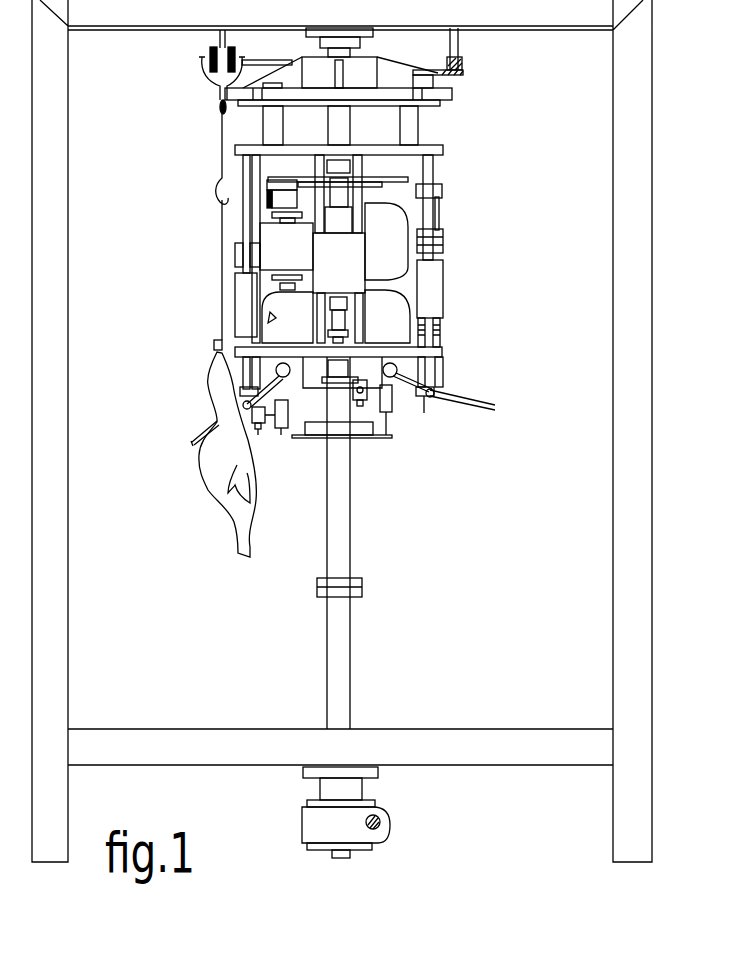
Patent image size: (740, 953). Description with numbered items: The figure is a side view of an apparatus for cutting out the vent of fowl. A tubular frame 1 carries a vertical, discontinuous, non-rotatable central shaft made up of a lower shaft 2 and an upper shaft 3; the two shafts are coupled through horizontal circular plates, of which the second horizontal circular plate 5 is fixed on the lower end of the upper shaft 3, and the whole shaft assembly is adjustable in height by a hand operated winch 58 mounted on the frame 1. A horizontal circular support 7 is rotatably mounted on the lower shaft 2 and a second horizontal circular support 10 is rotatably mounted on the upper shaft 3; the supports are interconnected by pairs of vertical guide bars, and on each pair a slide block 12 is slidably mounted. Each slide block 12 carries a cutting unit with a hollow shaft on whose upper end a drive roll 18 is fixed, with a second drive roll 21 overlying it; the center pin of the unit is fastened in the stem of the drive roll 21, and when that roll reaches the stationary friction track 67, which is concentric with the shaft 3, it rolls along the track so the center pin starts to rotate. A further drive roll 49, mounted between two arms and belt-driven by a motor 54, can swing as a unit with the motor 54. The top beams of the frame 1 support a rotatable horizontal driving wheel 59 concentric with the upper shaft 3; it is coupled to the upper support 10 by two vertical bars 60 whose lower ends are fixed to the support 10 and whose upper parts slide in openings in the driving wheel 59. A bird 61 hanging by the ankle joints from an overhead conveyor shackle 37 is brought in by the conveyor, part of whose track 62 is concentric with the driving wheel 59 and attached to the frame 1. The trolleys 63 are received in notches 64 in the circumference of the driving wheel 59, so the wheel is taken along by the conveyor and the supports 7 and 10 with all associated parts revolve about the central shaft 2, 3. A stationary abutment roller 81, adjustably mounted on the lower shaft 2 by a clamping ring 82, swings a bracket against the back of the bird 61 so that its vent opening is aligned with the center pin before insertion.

The tubular frame 1 is at (613, 519).
The lower shaft 2 is at (350, 512).
The upper shaft 3 is at (340, 118).
The second horizontal circular plate 5 is at (408, 180).
The horizontal circular support 7 is at (442, 352).
The second horizontal circular support 10 is at (443, 150).
The slide block 12 is at (443, 288).
The drive roll 18 is at (443, 238).
The second drive roll 21 is at (443, 192).
The overhead conveyor shackle 37 is at (222, 248).
The drive roll 49 is at (275, 242).
The motor 54 is at (393, 242).
The hand operated winch 58 is at (385, 816).
The driving wheel 59 is at (452, 93).
The vertical bars 60 is at (270, 118).
The bird 61 is at (217, 462).
The conveyor track 62 is at (462, 66).
The trolleys 63 is at (203, 64).
The notches 64 is at (262, 93).
The stationary friction track 67 is at (282, 197).
The stationary abutment roller 81 is at (285, 430).
The clamping ring 82 is at (360, 428).